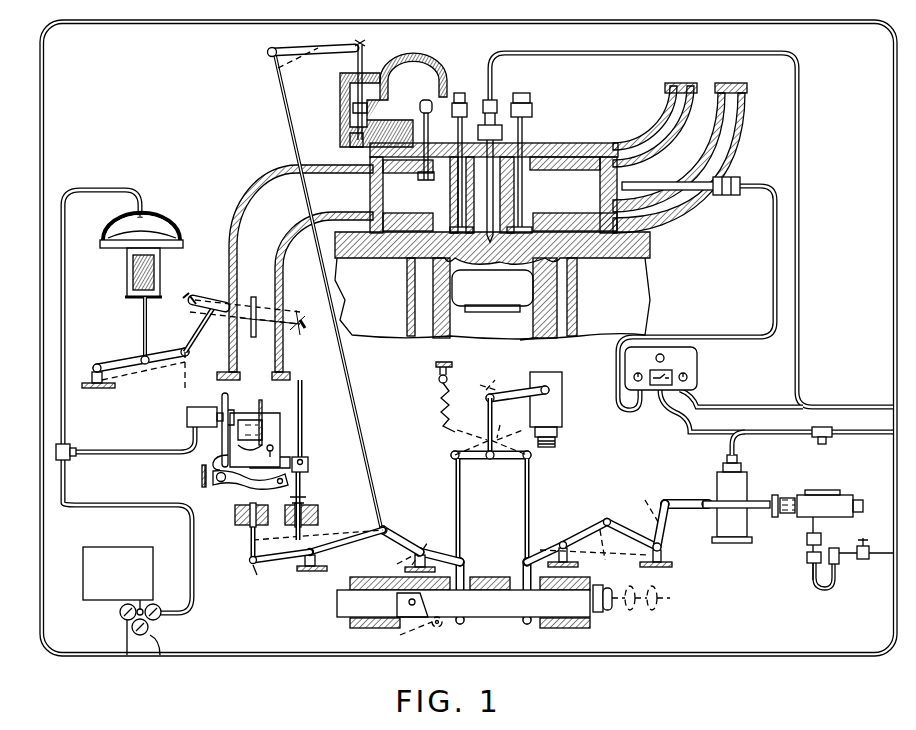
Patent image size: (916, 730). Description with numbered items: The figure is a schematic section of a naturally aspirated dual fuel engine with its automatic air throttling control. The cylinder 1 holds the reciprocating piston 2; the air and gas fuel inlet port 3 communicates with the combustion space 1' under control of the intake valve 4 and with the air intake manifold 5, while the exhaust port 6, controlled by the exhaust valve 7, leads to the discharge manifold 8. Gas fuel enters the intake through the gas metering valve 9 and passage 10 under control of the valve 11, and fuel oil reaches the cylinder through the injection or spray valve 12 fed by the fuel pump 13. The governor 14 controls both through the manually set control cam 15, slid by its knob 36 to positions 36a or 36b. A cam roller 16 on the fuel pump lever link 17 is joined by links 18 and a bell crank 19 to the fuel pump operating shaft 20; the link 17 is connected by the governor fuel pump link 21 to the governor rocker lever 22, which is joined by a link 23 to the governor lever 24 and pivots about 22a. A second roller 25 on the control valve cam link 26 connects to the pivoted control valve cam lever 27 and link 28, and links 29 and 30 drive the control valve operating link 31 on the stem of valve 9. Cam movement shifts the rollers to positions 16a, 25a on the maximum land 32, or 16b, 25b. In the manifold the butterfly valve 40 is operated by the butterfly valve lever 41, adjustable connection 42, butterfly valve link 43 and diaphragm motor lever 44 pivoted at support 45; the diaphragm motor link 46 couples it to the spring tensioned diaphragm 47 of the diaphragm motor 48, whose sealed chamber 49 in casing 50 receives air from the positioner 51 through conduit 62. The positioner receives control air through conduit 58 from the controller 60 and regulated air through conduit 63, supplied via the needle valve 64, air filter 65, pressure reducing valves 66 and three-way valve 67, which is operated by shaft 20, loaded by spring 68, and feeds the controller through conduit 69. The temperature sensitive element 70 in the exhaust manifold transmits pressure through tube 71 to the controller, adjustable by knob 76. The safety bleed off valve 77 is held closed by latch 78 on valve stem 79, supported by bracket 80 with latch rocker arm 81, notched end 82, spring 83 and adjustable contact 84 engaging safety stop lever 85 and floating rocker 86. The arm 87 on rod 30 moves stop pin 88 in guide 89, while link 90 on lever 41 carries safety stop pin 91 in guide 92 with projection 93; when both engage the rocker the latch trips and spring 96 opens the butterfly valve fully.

The cylinder 1 is at (492, 298).
The combustion space 1' is at (556, 209).
The piston 2 is at (538, 336).
The air and gas fuel inlet port 3 is at (449, 228).
The intake valve 4 is at (492, 248).
The air intake manifold 5 is at (290, 238).
The exhaust port 6 is at (518, 163).
The exhaust valve 7 is at (530, 224).
The discharge manifold 8 is at (686, 140).
The gas metering valve 9 is at (347, 112).
The passage 10 is at (398, 132).
The valve 11 is at (420, 178).
The fuel injection or spray valve 12 is at (502, 148).
The fuel pump 13 is at (722, 482).
The engine governor 14 is at (556, 407).
The manually set control cam 15 is at (345, 605).
The cam roller 16 is at (532, 627).
The roller position 16a is at (503, 603).
The roller position 16b is at (478, 610).
The fuel pump lever link 17 is at (521, 560).
The links 18 is at (594, 534).
The bell crank 19 is at (667, 537).
The fuel pump operating shaft 20 is at (713, 509).
The governor fuel pump link 21 is at (530, 468).
The governor rocker lever 22 is at (509, 463).
The lever pivot 22a is at (503, 430).
The link 23 is at (486, 422).
The governor lever 24 is at (511, 388).
The second cam roller 25 is at (455, 603).
The roller position 25a is at (405, 634).
The roller position 25b is at (420, 614).
The control valve cam link 26 is at (471, 571).
The control valve cam lever 27 is at (440, 550).
The link 28 is at (462, 512).
The link 29 is at (394, 536).
The gas control valve link or rod 30 is at (378, 492).
The control valve operating link 31 is at (306, 48).
The maximum land 32 is at (437, 628).
The operating knob 36 is at (605, 613).
The knob position 36a is at (636, 610).
The knob position 36b is at (670, 603).
The butterfly valve 40 is at (256, 338).
The butterfly valve lever 41 is at (298, 319).
The adjustable connection 42 is at (213, 292).
The butterfly valve link 43 is at (193, 342).
The diaphragm motor lever 44 is at (160, 349).
The support 45 is at (96, 364).
The diaphragm motor link 46 is at (140, 323).
The spring tensioned diaphragm 47 is at (142, 232).
The diaphragm motor 48 is at (110, 225).
The sealed chamber 49 is at (150, 214).
The casing 50 is at (177, 224).
The positioner 51 is at (113, 555).
The conduit 58 is at (179, 24).
The controller 60 is at (690, 358).
The conduit 62 is at (106, 189).
The conduit 63 is at (247, 654).
The needle valve 64 is at (866, 544).
The air filter 65 is at (840, 565).
The pressure reducing valves 66 is at (822, 540).
The three-way control valve 67 is at (832, 500).
The spring 68 is at (786, 493).
The conduit 69 is at (703, 436).
The temperature sensitive element 70 is at (638, 188).
The tube 71 is at (739, 333).
The manually operated knob or button 76 is at (660, 353).
The bleed off valve 77 is at (190, 414).
The latch 78 is at (237, 406).
The valve stem 79 is at (230, 403).
The bracket 80 is at (255, 438).
The latch rocker arm 81 is at (301, 455).
The notched end 82 is at (211, 453).
The spring 83 is at (263, 409).
The adjustable contact 84 is at (276, 440).
The safety stop lever 85 is at (231, 482).
The floating rocker 86 is at (310, 463).
The lever or arm 87 is at (346, 546).
The stop pin 88 is at (246, 532).
The guide 89 is at (238, 508).
The link 90 is at (305, 411).
The safety stop pin 91 is at (303, 487).
The guide 92 is at (320, 514).
The rocker engaging projection 93 is at (292, 502).
The spring 96 is at (124, 266).